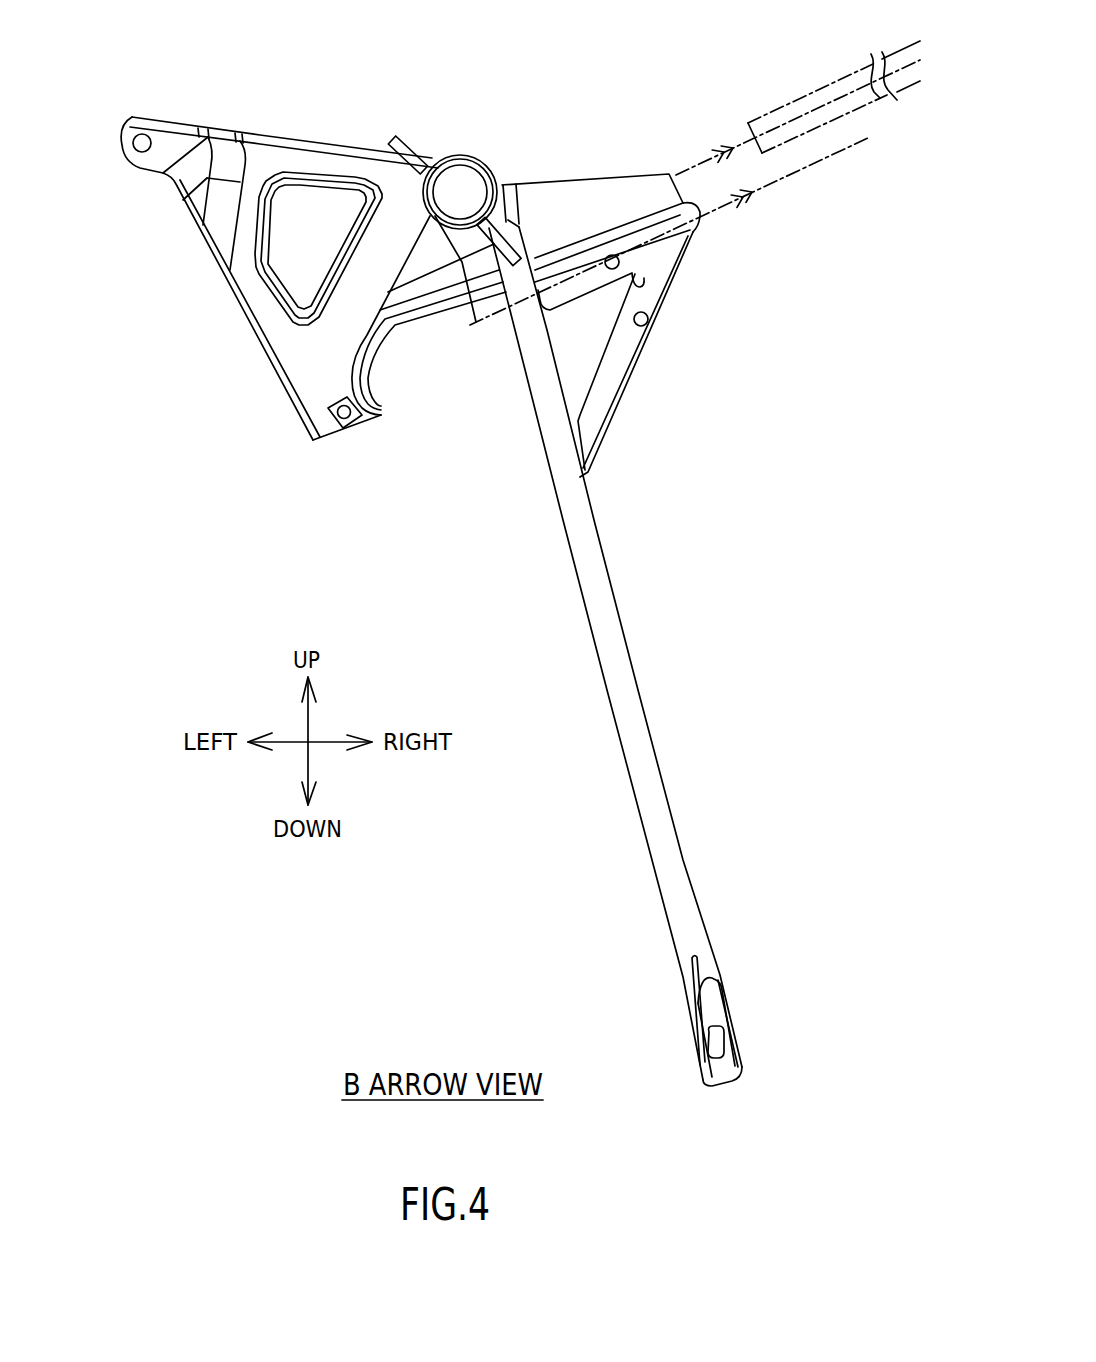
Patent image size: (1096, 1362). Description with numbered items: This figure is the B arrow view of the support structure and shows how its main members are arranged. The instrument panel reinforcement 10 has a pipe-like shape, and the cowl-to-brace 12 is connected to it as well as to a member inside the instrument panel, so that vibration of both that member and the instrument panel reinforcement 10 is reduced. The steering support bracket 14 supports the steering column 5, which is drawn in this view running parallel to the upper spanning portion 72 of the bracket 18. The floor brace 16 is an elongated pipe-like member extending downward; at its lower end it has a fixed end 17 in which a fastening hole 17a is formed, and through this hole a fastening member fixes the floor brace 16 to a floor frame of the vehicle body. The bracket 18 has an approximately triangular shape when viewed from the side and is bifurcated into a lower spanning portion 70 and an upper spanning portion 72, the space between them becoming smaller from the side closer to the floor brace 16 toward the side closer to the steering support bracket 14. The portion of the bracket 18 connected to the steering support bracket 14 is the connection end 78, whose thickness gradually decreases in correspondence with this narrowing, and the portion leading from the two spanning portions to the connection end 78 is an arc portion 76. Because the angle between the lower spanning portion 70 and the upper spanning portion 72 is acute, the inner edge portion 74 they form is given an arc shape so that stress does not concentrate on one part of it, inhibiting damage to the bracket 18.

The steering column 5 is at (807, 97).
The instrument panel reinforcement 10 is at (460, 188).
The cowl-to-brace 12 is at (150, 255).
The steering support bracket 14 is at (648, 156).
The floor brace 16 is at (650, 783).
The fixed end 17 is at (710, 1010).
The fastening hole 17a is at (723, 1070).
The bracket 18 is at (760, 231).
The lower spanning portion 70 is at (628, 365).
The upper spanning portion 72 is at (563, 290).
The inner edge portion 74 is at (642, 290).
The arc portion 76 is at (700, 226).
The connection end 78 is at (607, 242).